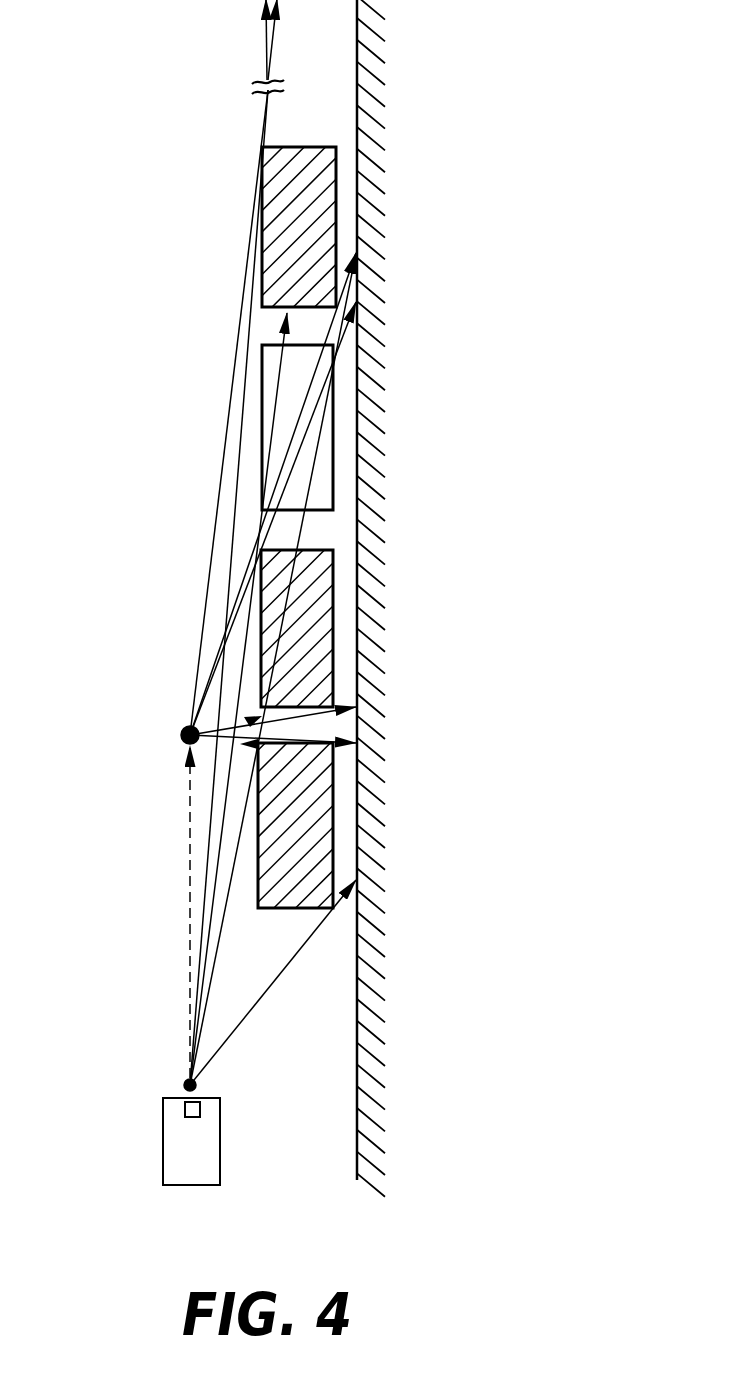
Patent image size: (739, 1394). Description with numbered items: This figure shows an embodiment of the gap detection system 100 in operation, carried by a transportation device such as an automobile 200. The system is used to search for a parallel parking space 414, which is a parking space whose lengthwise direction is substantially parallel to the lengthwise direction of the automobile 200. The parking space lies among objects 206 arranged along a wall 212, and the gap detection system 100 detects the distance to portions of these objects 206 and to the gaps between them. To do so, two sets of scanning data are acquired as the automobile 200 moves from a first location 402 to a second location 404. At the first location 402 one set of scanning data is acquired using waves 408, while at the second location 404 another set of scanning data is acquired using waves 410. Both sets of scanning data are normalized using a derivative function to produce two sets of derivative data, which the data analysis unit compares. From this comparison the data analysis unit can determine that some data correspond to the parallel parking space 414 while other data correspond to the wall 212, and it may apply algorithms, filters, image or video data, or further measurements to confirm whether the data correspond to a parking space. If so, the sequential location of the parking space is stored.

The gap detection system 100 is at (203, 1112).
The automobile 200 is at (162, 1163).
The objects 206 is at (323, 820).
The wall 212 is at (357, 48).
The location 402 is at (183, 1085).
The location 404 is at (180, 733).
The waves 408 is at (275, 992).
The waves 410 is at (214, 527).
The parallel parking space 414 is at (322, 418).